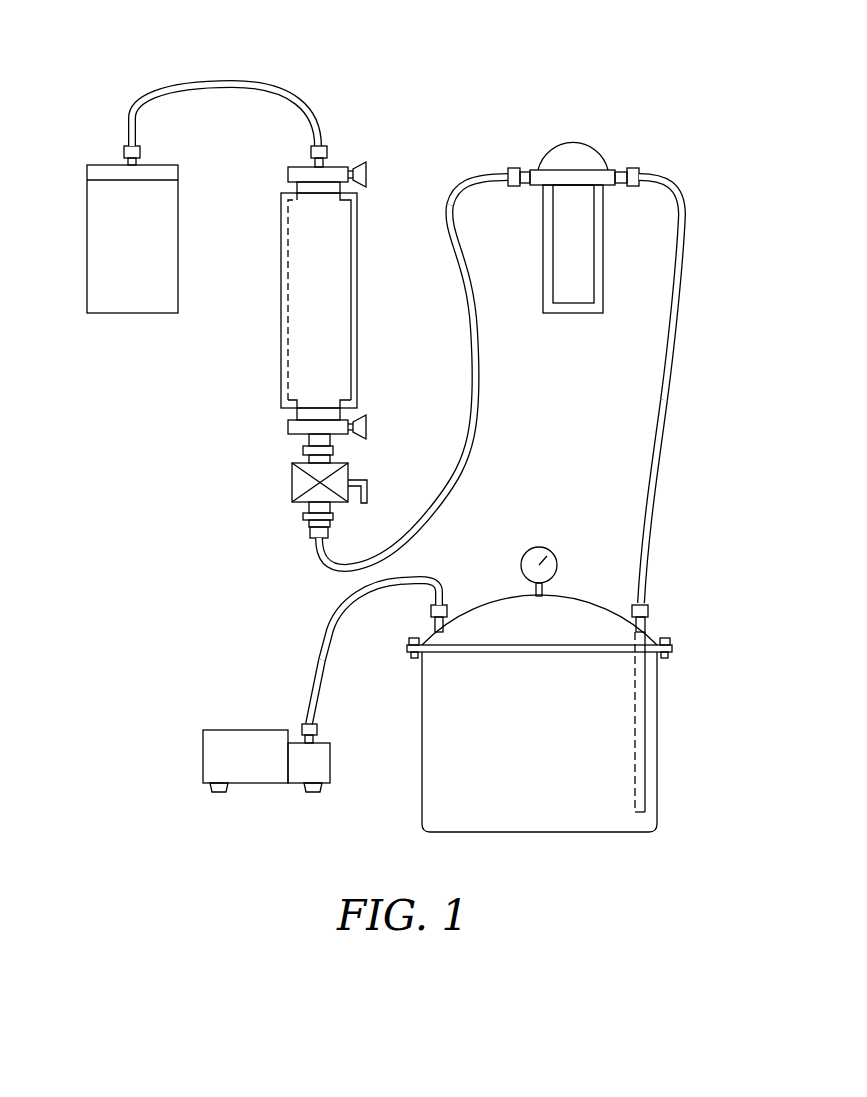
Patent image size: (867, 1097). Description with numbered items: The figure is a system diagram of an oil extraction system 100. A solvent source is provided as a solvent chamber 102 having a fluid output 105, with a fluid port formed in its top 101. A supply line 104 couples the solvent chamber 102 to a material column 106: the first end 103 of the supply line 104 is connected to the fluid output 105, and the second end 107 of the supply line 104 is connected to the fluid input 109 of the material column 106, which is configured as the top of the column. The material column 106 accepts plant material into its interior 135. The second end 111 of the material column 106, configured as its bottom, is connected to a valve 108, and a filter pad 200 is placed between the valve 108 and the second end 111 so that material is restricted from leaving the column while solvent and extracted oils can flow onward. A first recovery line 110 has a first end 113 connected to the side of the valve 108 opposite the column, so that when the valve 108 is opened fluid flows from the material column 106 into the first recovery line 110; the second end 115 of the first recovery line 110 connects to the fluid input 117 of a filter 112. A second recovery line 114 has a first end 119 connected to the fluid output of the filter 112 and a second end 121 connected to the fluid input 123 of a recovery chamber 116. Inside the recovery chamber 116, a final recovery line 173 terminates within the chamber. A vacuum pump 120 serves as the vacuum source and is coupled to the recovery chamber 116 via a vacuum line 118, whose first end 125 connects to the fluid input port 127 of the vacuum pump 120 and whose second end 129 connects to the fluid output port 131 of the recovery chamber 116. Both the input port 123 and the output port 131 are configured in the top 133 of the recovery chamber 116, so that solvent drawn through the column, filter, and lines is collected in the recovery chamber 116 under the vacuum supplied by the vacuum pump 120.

The system 100 is at (460, 42).
The top of the solvent chamber 101 is at (158, 172).
The solvent chamber 102 is at (80, 242).
The first end of the supply line 103 is at (130, 128).
The supply line 104 is at (153, 98).
The fluid output of the solvent chamber 105 is at (128, 161).
The material column 106 is at (276, 302).
The second end of the supply line 107 is at (306, 101).
The valve 108 is at (287, 485).
The fluid input of the material column 109 is at (333, 161).
The first recovery line 110 is at (490, 420).
The second end of the material column 111 is at (345, 413).
The filter 112 is at (579, 142).
The first end of the first recovery line 113 is at (310, 553).
The second recovery line 114 is at (690, 256).
The second end of the first recovery line 115 is at (483, 172).
The recovery chamber 116 is at (665, 740).
The fluid input of the filter 117 is at (530, 170).
The vacuum line 118 is at (316, 630).
The first end of the second recovery line 119 is at (662, 172).
The vacuum pump 120 is at (197, 760).
The second end of the second recovery line 121 is at (650, 557).
The fluid input of the recovery chamber 123 is at (650, 621).
The first end of the vacuum line 125 is at (306, 700).
The fluid input port of the vacuum pump 127 is at (320, 742).
The second end of the vacuum line 129 is at (420, 580).
The fluid output port of the recovery chamber 131 is at (420, 620).
The top of the recovery chamber 133 is at (592, 618).
The interior of the material column 135 is at (314, 333).
The final recovery line 173 is at (633, 718).
The filter pad 200 is at (298, 451).